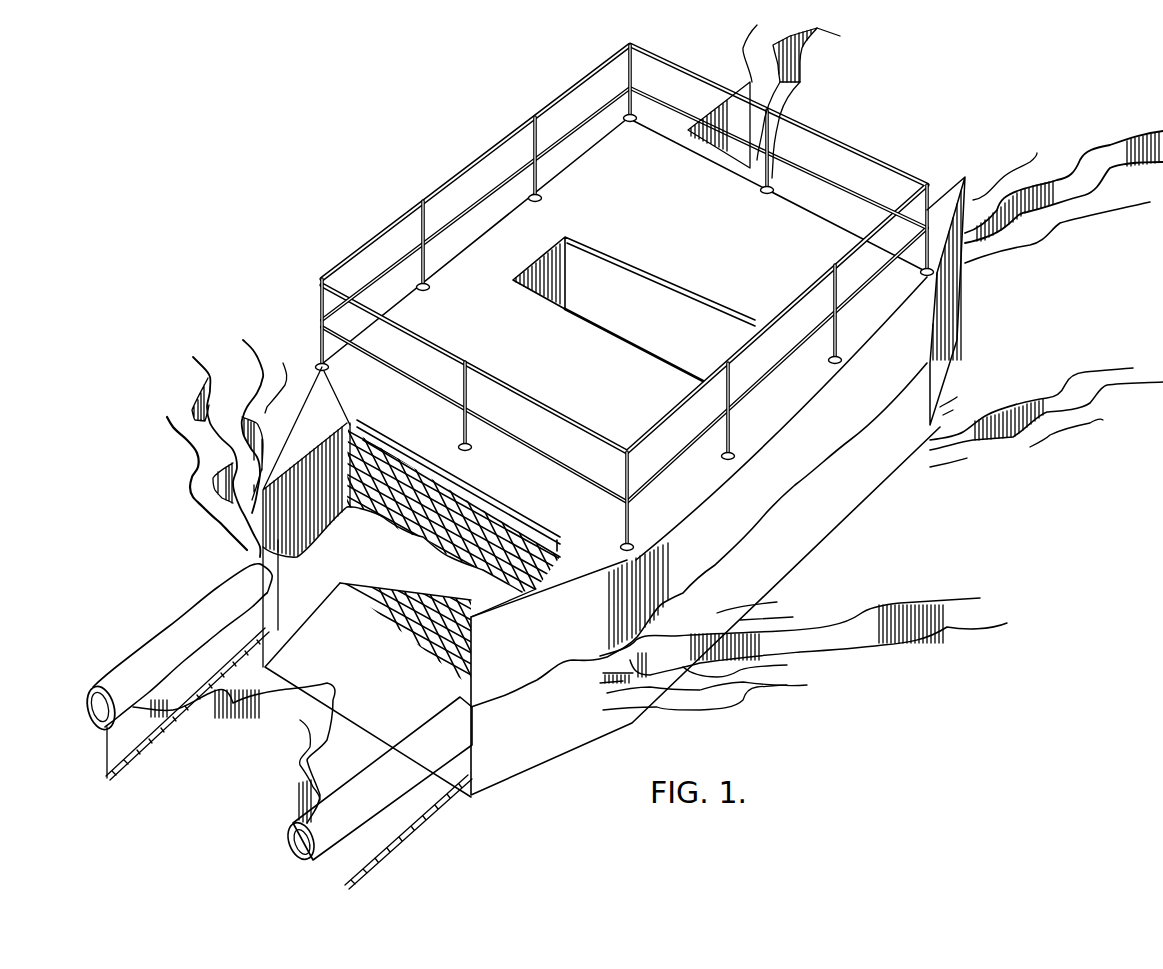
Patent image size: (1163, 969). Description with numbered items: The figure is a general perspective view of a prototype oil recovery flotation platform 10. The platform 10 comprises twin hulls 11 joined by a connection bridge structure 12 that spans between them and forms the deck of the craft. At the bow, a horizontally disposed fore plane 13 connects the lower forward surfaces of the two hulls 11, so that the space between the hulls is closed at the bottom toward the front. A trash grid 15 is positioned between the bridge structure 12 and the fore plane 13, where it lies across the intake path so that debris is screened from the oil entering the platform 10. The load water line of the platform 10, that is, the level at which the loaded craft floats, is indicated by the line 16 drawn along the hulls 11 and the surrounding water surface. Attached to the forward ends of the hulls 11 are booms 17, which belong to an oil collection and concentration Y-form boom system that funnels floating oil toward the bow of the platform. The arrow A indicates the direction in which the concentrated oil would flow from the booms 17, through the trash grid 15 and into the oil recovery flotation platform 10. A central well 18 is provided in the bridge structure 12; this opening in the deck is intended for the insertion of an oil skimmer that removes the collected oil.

The flotation platform 10 is at (304, 344).
The hulls 11 is at (290, 415).
The connection bridge structure 12 is at (465, 343).
The fore plane 13 is at (378, 720).
The trash grid 15 is at (349, 503).
The load water line 16 is at (773, 510).
The booms 17 is at (132, 677).
The central well 18 is at (652, 292).
The arrow A is at (328, 690).